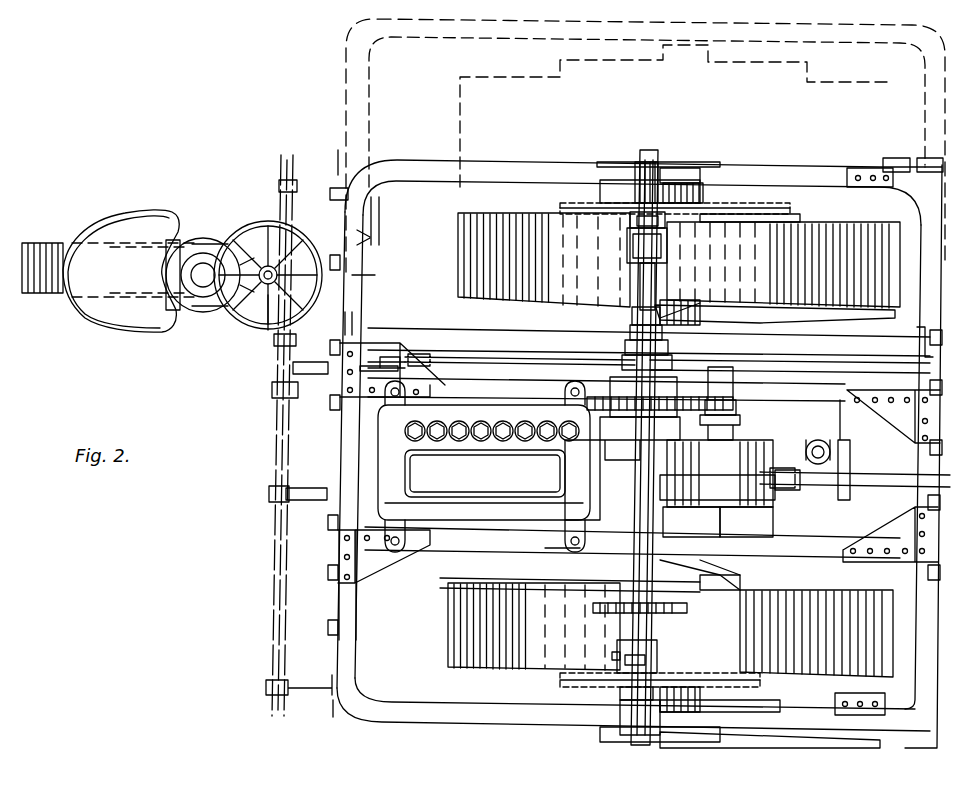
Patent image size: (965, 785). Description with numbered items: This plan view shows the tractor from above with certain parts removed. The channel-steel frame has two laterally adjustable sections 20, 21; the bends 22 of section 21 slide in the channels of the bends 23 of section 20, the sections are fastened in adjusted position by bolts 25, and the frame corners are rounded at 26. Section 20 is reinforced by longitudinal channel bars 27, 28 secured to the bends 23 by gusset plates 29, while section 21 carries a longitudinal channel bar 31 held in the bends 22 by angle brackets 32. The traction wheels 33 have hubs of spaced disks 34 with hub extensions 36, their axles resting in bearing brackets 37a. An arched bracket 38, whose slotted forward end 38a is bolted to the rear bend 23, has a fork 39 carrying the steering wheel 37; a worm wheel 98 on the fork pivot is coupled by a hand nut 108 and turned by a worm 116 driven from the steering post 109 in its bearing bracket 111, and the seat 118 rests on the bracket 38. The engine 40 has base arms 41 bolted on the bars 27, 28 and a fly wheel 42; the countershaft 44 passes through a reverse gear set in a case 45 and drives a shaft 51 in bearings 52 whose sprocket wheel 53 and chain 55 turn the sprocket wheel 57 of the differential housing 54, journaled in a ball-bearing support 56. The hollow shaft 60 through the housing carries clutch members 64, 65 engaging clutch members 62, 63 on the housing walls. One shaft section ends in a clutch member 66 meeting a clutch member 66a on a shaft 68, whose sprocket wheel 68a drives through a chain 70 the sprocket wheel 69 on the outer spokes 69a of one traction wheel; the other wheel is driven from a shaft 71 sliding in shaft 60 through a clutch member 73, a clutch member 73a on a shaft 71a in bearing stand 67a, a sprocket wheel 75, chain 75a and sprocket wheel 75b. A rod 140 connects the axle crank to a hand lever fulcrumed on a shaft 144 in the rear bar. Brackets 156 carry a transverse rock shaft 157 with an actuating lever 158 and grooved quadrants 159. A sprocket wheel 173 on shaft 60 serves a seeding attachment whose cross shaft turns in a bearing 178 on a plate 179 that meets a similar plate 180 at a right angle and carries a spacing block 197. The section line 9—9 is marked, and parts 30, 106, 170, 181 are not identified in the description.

The section line 9— 9 is at (565, 470).
The frame section 20 is at (398, 710).
The frame section 21 is at (530, 168).
The bends 22 is at (372, 205).
The bends 23 is at (350, 640).
The bolts 25 is at (335, 245).
The rounded corners 26 is at (348, 166).
The longitudinal channel bar 27 is at (485, 540).
The longitudinal channel bar 28 is at (500, 412).
The gusset plates 29 is at (890, 405).
The cross bar 30 is at (880, 392).
The longitudinal channel bar 31 is at (490, 340).
The angle brackets 32 is at (372, 312).
The traction wheels 33 is at (458, 238).
The disks 34 is at (722, 318).
The hub extension 36 is at (710, 195).
The steering wheel 37 is at (45, 295).
The bearing brackets 37a is at (720, 163).
The arched bracket 38 is at (268, 228).
The forward end of bracket 38a is at (372, 238).
The bottom section (fork) 39 is at (120, 300).
The internal-combustion engine 40 is at (492, 450).
The base arms 41 is at (410, 388).
The fly wheel 42 is at (605, 510).
The countershaft 44 is at (838, 470).
The case 45 is at (755, 480).
The shaft 51 is at (730, 388).
The bearings 52 is at (700, 470).
The sprocket wheel 53 is at (735, 420).
The differential housing 54 is at (630, 385).
The chain 55 is at (770, 480).
The ball-bearing support 56 is at (668, 345).
The sprocket wheel 57 is at (625, 362).
The hollow shaft 60 is at (690, 542).
The clutch member 62 is at (602, 430).
The clutch member 63 is at (633, 310).
The clutch member 64 is at (691, 522).
The clutch member 65 is at (645, 325).
The clutch member 66 is at (617, 648).
The clutch member 66a is at (615, 664).
The bearing stand 67a is at (645, 162).
The shaft 68 is at (620, 694).
The sprocket wheel 68a is at (652, 685).
The sprocket wheel 69 is at (770, 690).
The outer spokes 69a is at (780, 592).
The chain 70 is at (560, 680).
The shaft 71 is at (660, 280).
The shaft 71a is at (636, 172).
The clutch member 73 is at (628, 250).
The clutch member 73a is at (630, 226).
The sprocket wheel 75 is at (680, 170).
The chain 75a is at (748, 205).
The sprocket wheel 75b is at (790, 212).
The worm wheel 98 is at (203, 238).
The hood 106 is at (918, 160).
The hand nut 108 is at (195, 300).
The steering post 109 is at (270, 302).
The bearing bracket 111 is at (372, 276).
The worm 116 is at (258, 298).
The seat 118 is at (108, 225).
The rod 140 is at (535, 358).
The shaft 144 is at (360, 330).
The brackets 156 is at (305, 380).
The rock shaft 157 is at (278, 582).
The actuating lever 158 is at (278, 345).
The quadrants 159 is at (322, 350).
The bearing 170 is at (822, 438).
The sprocket wheel 173 is at (690, 614).
The bearing 178 is at (897, 158).
The plate 179 is at (916, 160).
The plate 180 is at (885, 232).
The plate 181 is at (878, 188).
The solid block 197 is at (942, 165).